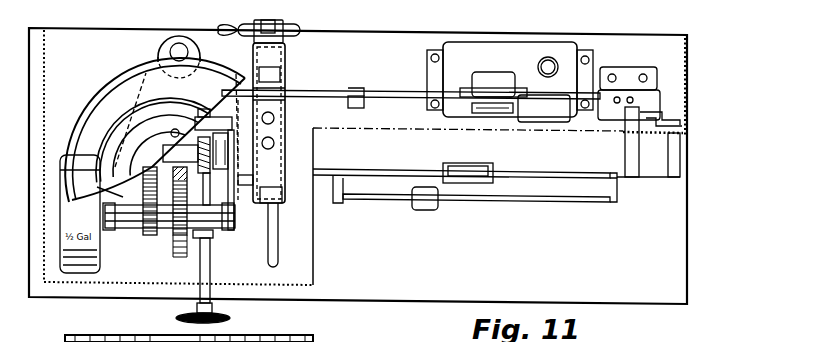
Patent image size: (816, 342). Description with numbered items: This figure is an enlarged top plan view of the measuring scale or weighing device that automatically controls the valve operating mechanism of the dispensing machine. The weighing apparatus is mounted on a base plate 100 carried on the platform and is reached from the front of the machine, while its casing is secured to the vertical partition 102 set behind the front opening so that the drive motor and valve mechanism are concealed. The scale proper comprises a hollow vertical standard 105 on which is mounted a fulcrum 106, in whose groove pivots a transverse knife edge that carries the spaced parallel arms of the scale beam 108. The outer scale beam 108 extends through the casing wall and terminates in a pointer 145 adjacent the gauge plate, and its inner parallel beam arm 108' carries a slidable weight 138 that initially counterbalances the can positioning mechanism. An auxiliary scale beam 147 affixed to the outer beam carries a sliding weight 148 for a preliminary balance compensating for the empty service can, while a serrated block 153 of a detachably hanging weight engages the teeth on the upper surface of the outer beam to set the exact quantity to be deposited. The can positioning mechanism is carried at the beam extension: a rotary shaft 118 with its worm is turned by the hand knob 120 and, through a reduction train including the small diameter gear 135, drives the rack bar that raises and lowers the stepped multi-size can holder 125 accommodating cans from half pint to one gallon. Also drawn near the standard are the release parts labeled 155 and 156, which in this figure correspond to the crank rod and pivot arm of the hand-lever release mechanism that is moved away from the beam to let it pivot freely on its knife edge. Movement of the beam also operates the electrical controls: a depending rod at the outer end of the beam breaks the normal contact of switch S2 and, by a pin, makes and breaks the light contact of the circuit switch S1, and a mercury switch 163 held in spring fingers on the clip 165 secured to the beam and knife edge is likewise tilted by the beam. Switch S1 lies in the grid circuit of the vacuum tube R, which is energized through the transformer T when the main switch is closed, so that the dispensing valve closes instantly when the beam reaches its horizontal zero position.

The base plate 100 is at (688, 268).
The vertical partition 102 is at (48, 82).
The hollow vertical standard 105 is at (297, 193).
The fulcrum 106 is at (292, 80).
The scale beam 108 is at (468, 206).
The inner parallel beam arm 108' is at (403, 79).
The rotary shaft 118 is at (227, 261).
The hand knob 120 is at (233, 318).
The multi-size can holder 125 is at (210, 338).
The small diameter gear 135 is at (148, 234).
The slidable weight 138 is at (555, 120).
The pointer 145 is at (662, 185).
The auxiliary scale beam 147 is at (580, 202).
The sliding weight 148 is at (424, 204).
The serrated block 153 is at (503, 166).
The pin rod 155 is at (280, 248).
The collar 156 is at (353, 97).
The mercury switch 163 is at (300, 28).
The clip 165 is at (279, 58).
The vacuum tube R is at (552, 58).
The transformer T is at (488, 77).
The circuit switch S1 is at (630, 88).
The switch S2 is at (682, 118).